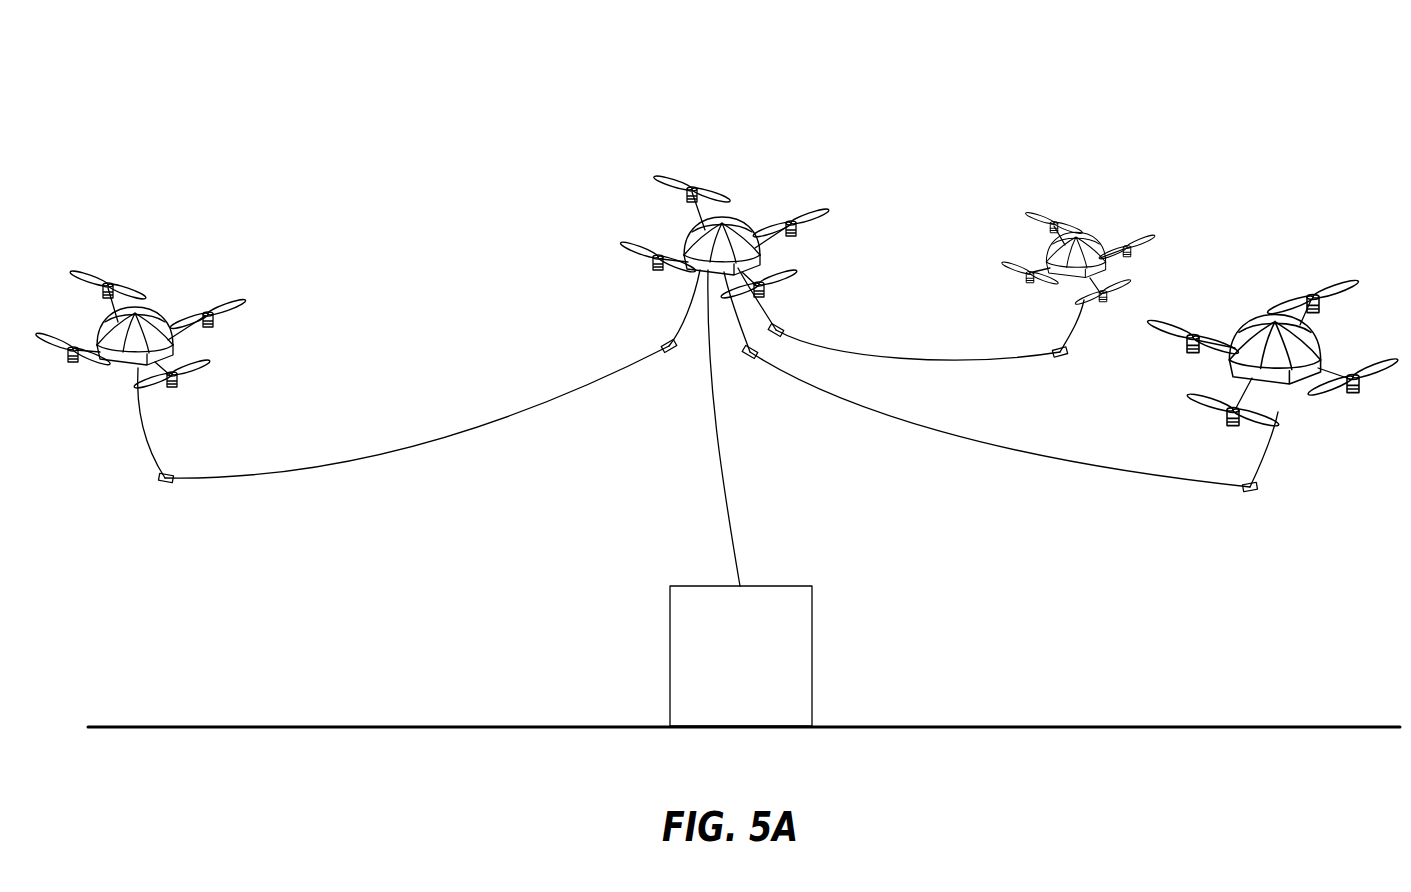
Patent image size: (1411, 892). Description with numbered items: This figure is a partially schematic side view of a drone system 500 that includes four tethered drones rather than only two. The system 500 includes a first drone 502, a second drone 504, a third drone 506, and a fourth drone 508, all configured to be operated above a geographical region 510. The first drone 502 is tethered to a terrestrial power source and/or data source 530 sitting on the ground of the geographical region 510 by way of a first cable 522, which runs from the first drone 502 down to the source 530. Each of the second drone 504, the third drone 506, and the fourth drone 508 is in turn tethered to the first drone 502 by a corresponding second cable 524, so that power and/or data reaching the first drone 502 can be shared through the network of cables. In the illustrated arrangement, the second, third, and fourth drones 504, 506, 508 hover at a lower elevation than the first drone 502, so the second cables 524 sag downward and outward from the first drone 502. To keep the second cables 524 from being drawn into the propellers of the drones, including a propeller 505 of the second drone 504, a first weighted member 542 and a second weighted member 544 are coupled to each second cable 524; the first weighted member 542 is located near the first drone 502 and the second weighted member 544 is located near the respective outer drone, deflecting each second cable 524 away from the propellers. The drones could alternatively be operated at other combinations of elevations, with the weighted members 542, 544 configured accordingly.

The drone system 500 is at (347, 128).
The first drone 502 is at (722, 205).
The second drone 504 is at (1248, 314).
The propeller 505 is at (1327, 292).
The third drone 506 is at (1078, 230).
The fourth drone 508 is at (144, 302).
The geographical region 510 is at (744, 625).
The first cable 522 is at (722, 478).
The second cable 524 is at (408, 452).
The terrestrial power source and/or data source 530 is at (741, 656).
The first weighted member 542 is at (668, 354).
The second weighted member 544 is at (167, 486).